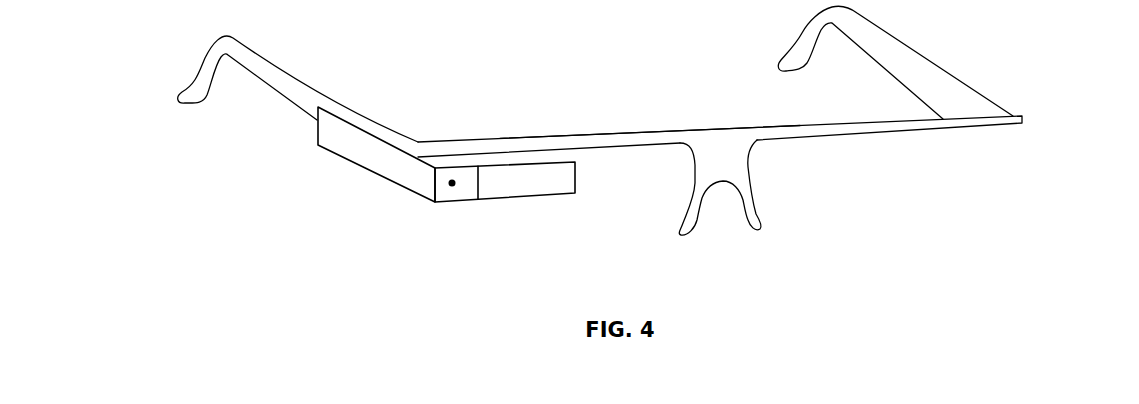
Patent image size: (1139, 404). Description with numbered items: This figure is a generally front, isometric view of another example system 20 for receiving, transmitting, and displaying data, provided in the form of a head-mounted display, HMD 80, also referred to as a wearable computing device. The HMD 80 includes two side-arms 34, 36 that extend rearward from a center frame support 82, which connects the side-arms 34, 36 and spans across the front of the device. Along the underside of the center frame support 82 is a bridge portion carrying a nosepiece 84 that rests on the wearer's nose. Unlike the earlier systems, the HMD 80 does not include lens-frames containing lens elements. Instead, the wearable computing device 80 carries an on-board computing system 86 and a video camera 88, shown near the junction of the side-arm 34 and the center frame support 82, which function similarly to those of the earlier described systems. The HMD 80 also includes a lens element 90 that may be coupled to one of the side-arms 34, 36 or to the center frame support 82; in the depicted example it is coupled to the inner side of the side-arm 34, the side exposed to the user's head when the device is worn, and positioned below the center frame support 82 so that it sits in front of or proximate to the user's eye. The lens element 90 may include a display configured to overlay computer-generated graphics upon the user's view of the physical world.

The system 20 is at (993, 47).
The side-arm 34 is at (282, 78).
The side-arm 36 is at (867, 30).
The HMD 80 is at (1008, 168).
The center frame support 82 is at (620, 138).
The nosepiece 84 is at (743, 180).
The on-board computing system 86 is at (355, 165).
The video camera 88 is at (452, 183).
The lens element 90 is at (530, 198).